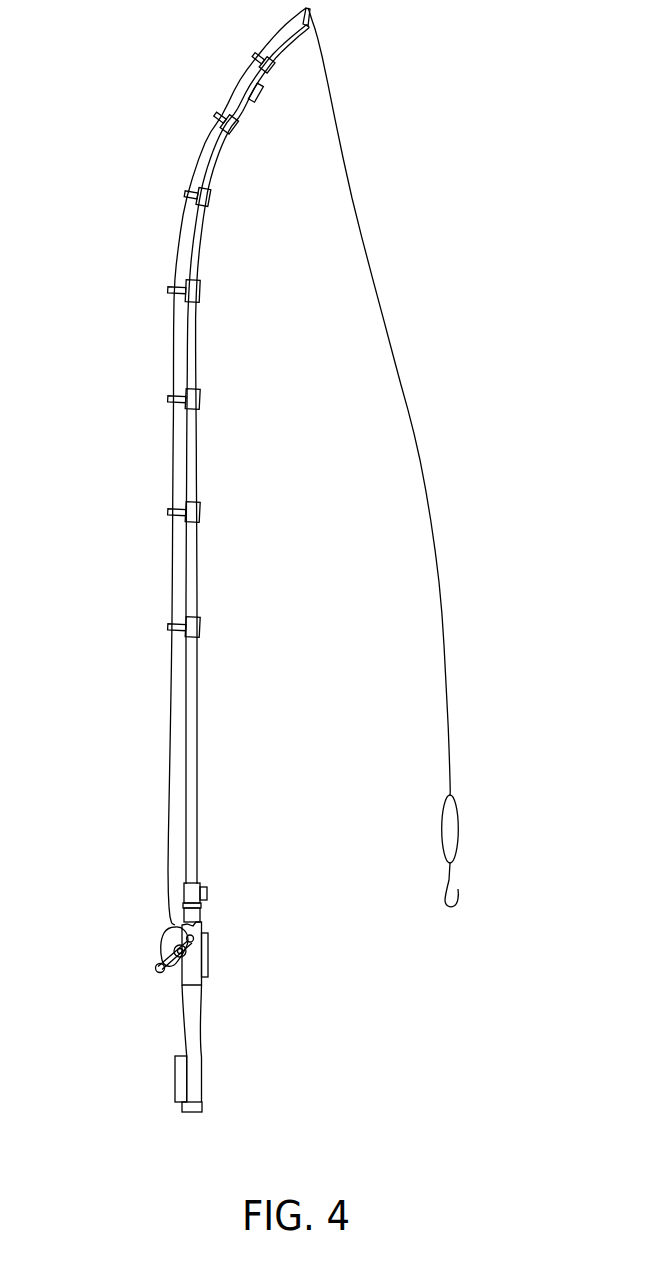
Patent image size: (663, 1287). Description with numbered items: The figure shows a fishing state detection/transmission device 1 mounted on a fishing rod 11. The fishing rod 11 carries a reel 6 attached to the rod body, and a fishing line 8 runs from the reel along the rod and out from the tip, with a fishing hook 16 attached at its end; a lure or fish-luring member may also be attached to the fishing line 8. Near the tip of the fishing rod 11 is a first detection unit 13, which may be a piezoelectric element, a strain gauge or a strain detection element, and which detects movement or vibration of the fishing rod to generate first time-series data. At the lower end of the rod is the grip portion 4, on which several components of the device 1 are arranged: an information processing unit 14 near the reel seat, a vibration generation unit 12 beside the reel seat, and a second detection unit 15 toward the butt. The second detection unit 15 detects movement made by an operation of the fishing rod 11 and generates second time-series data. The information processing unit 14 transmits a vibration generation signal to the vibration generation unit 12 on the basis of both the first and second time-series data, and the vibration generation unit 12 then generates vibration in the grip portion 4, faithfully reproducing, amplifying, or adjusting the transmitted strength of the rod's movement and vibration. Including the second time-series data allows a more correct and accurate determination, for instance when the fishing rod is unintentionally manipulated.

The fishing state detection/transmission device 1 is at (195, 560).
The grip portion 4 is at (238, 988).
The reel 6 is at (148, 935).
The fishing line 8 is at (420, 458).
The fishing rod 11 is at (151, 457).
The vibration generation unit 12 is at (208, 957).
The first detection unit 13 is at (257, 93).
The information processing unit 14 is at (207, 896).
The second detection unit 15 is at (238, 1081).
The fishing hook 16 is at (446, 830).